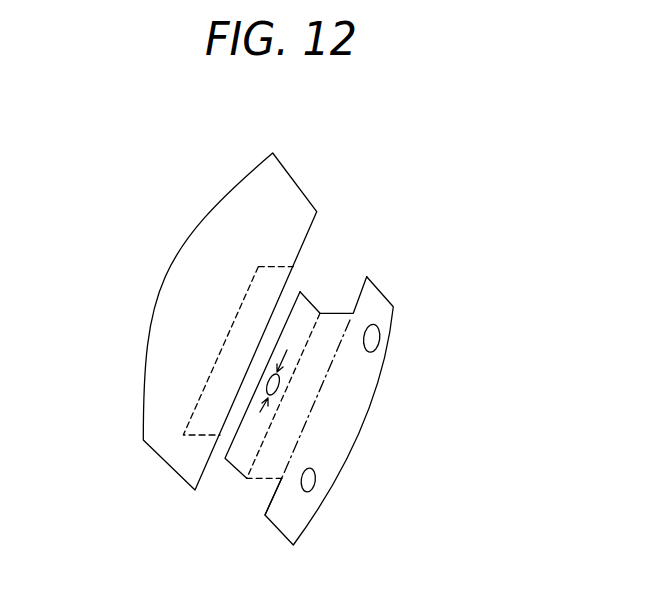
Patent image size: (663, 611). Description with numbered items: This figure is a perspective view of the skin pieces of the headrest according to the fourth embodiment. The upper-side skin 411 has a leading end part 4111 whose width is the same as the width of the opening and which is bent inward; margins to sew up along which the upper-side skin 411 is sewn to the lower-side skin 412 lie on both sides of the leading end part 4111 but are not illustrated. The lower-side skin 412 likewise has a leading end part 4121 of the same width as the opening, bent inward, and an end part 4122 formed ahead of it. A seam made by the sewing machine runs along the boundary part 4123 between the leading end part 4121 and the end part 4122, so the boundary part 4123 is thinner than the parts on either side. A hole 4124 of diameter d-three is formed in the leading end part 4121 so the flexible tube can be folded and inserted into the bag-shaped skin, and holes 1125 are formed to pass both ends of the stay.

The upper-side skin 411 is at (190, 321).
The leading end part 4111 is at (240, 323).
The lower-side skin 412 is at (328, 428).
The leading end part 4121 is at (262, 468).
The end part 4122 is at (239, 460).
The boundary part 4123 is at (303, 350).
The hole 4124 is at (280, 388).
The holes 1125 is at (380, 341).